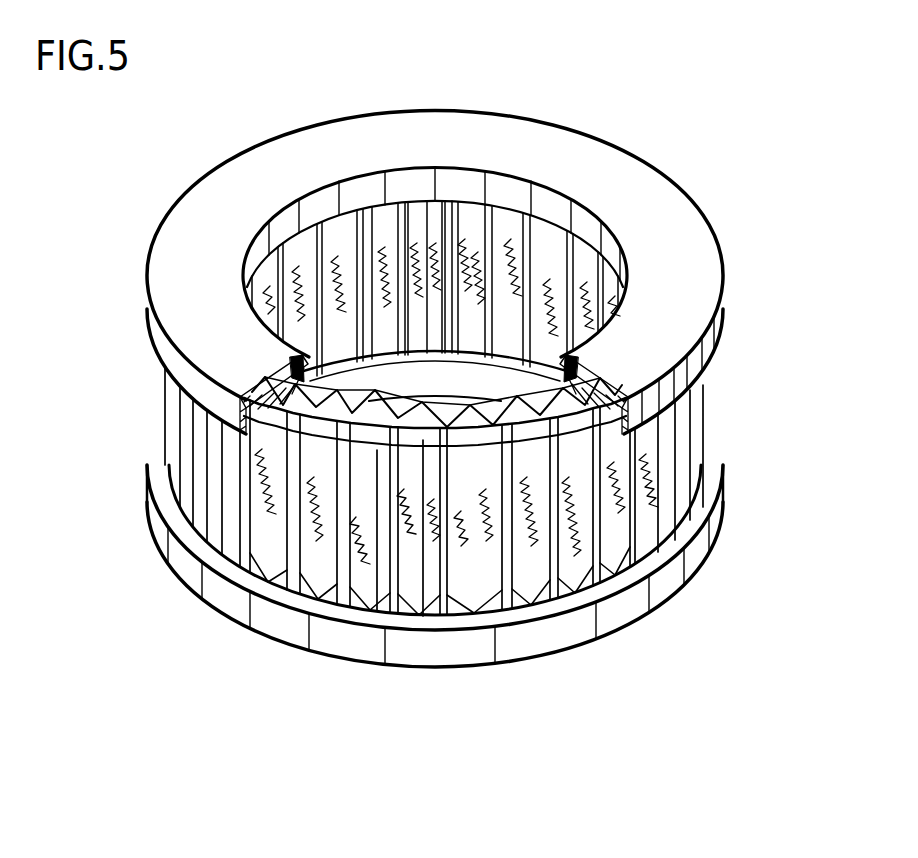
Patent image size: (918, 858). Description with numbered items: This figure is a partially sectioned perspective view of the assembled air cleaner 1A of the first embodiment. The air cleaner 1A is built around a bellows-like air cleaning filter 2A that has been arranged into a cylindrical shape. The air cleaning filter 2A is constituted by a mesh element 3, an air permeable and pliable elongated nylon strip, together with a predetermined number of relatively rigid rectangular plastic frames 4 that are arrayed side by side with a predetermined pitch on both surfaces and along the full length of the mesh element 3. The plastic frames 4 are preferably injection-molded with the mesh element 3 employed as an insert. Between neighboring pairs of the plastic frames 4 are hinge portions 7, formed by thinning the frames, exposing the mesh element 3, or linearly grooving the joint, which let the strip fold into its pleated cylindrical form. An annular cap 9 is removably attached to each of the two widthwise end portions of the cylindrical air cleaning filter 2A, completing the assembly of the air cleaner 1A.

The air cleaner 1A is at (602, 120).
The air cleaning filter 2A is at (702, 402).
The mesh element 3 is at (613, 547).
The plastic frames 4 is at (331, 594).
The hinge portions 7 is at (490, 612).
The annular cap 9 is at (688, 301).